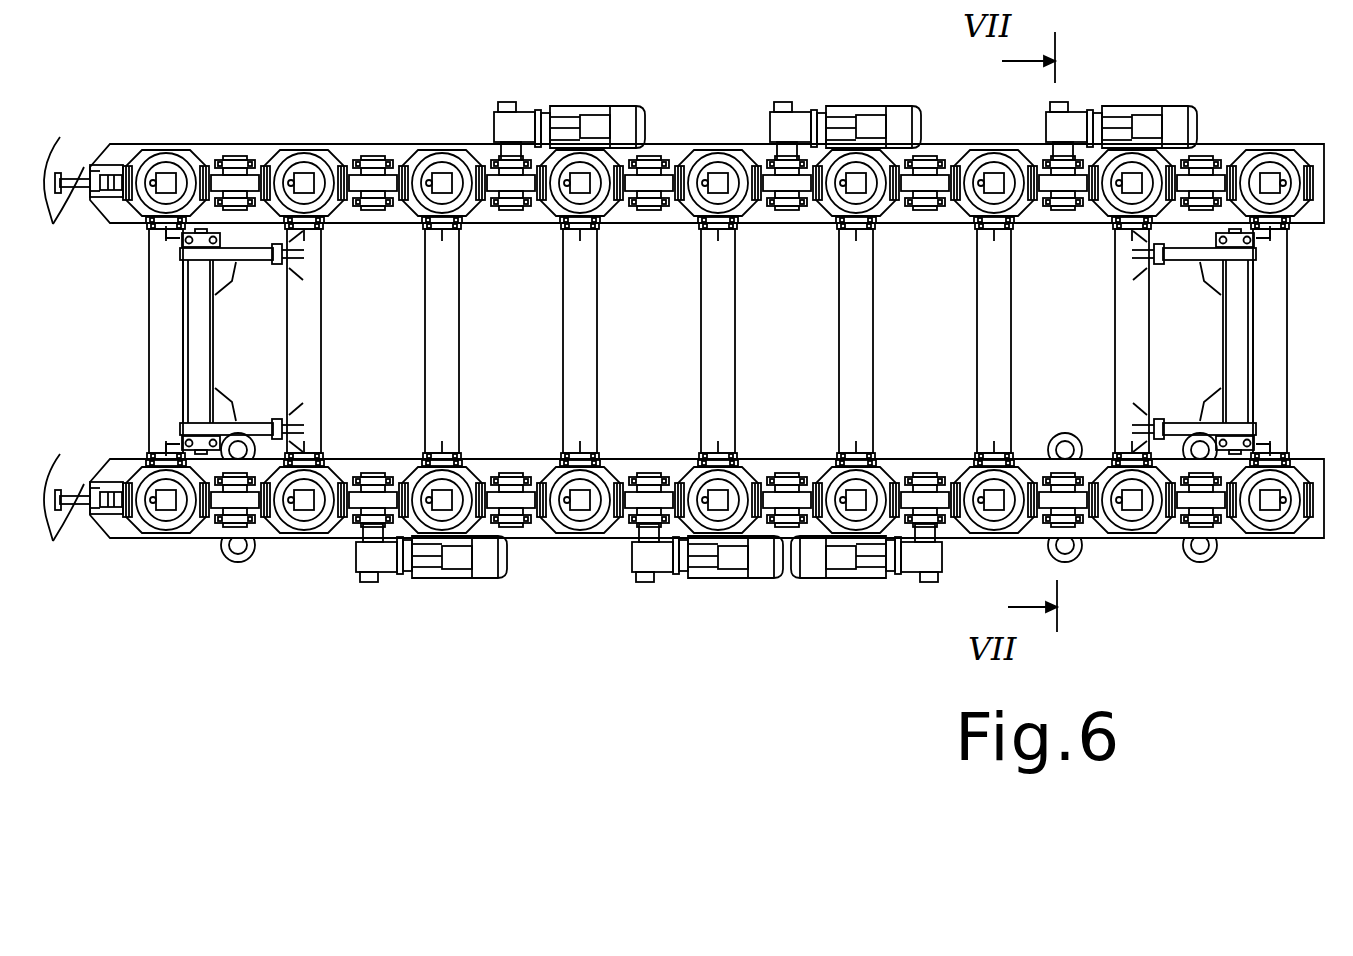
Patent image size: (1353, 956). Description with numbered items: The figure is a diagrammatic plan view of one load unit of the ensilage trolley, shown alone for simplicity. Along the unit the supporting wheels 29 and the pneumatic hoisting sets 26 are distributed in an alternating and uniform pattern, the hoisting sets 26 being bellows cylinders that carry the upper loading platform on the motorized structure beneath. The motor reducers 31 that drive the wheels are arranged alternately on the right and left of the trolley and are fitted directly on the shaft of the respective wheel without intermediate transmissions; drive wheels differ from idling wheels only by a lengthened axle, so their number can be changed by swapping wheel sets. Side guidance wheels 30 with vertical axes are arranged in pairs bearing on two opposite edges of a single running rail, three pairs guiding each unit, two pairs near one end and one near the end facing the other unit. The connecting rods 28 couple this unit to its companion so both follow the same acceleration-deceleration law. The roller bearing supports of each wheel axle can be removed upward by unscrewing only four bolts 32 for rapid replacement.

The hoisting sets 26 is at (177, 149).
The connecting rods 28 is at (82, 188).
The supporting wheels 29 is at (373, 178).
The side guidance wheels 30 is at (240, 561).
The motor reducers 31 is at (483, 581).
The bolts 32 is at (493, 474).